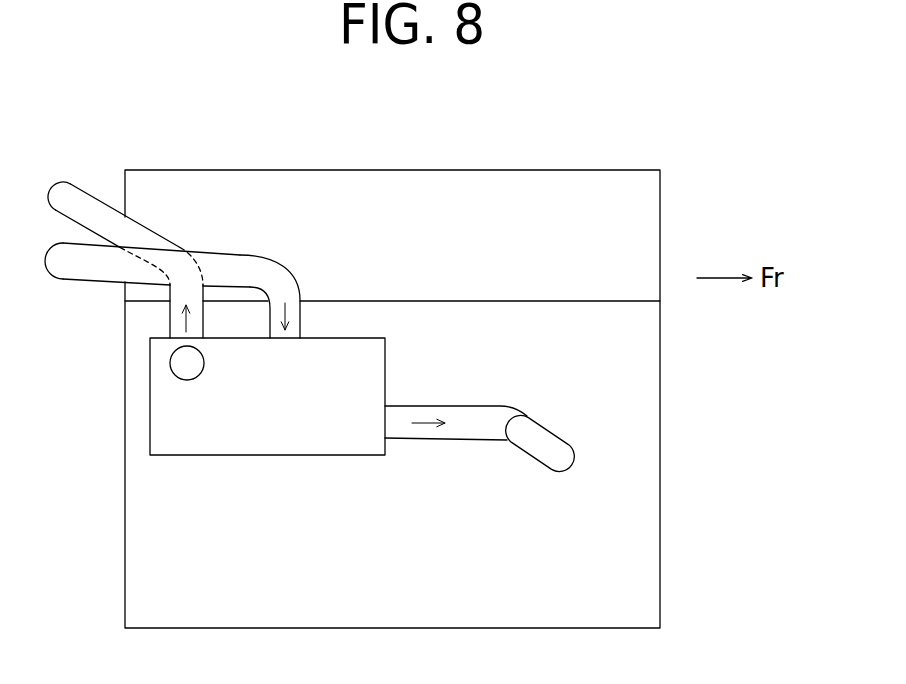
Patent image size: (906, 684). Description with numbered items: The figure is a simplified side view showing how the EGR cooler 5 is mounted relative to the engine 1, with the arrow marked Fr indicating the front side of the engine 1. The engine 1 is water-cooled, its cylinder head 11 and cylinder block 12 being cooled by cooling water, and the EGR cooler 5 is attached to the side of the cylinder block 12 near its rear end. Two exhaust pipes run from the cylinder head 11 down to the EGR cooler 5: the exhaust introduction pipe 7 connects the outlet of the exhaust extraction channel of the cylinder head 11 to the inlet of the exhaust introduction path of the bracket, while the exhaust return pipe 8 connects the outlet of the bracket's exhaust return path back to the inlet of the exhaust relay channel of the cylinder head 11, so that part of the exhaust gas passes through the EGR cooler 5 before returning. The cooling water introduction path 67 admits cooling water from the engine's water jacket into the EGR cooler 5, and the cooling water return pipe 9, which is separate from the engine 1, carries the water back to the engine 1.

The engine 1 is at (662, 168).
The cylinder head 11 is at (637, 220).
The cylinder block 12 is at (635, 363).
The EGR cooler 5 is at (320, 442).
The exhaust introduction pipe 7 is at (234, 253).
The exhaust return pipe 8 is at (146, 228).
The cooling water return pipe 9 is at (475, 404).
The cooling water introduction path 67 is at (171, 366).